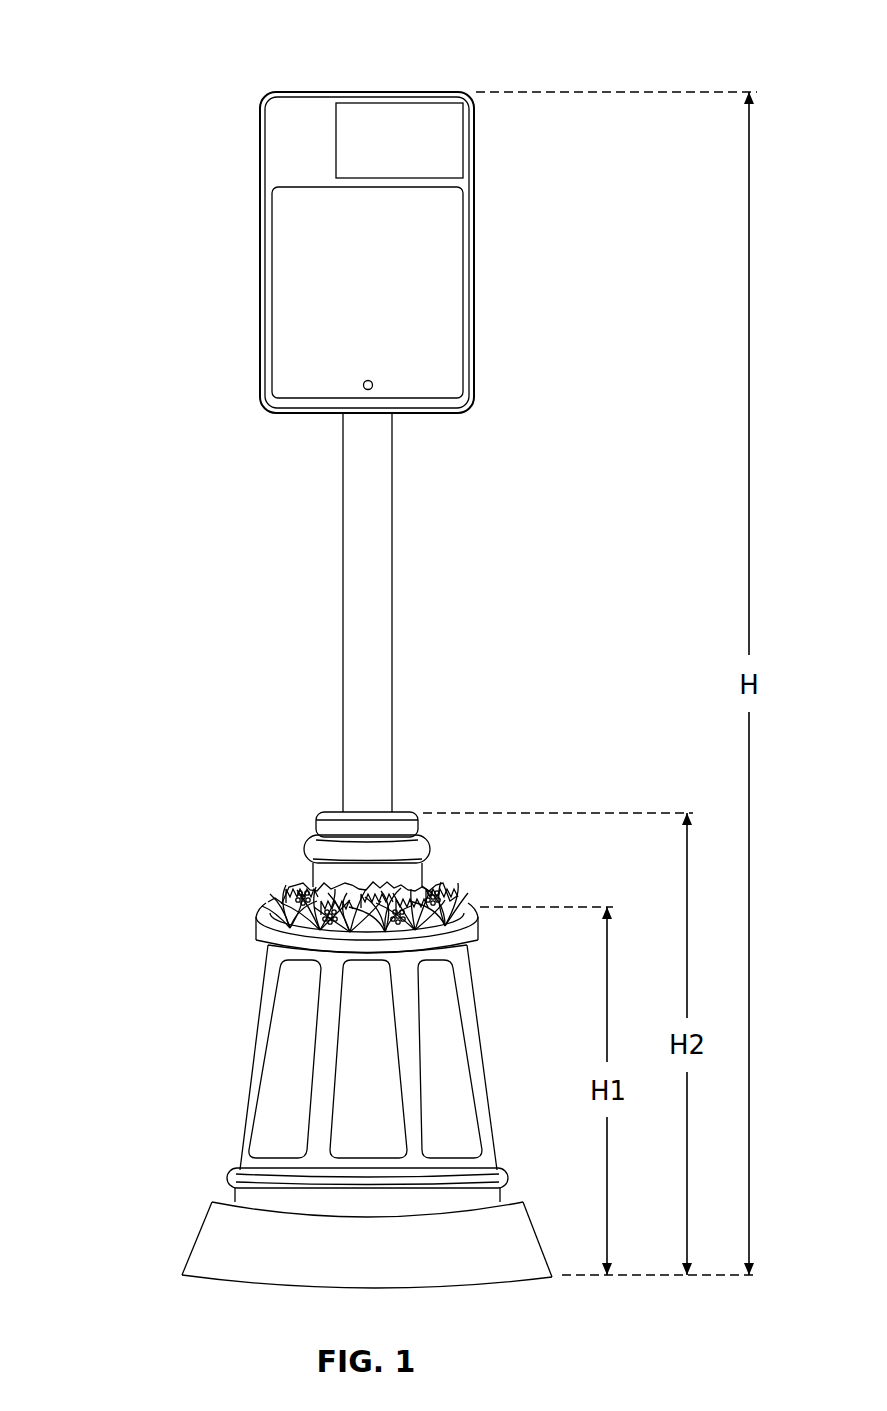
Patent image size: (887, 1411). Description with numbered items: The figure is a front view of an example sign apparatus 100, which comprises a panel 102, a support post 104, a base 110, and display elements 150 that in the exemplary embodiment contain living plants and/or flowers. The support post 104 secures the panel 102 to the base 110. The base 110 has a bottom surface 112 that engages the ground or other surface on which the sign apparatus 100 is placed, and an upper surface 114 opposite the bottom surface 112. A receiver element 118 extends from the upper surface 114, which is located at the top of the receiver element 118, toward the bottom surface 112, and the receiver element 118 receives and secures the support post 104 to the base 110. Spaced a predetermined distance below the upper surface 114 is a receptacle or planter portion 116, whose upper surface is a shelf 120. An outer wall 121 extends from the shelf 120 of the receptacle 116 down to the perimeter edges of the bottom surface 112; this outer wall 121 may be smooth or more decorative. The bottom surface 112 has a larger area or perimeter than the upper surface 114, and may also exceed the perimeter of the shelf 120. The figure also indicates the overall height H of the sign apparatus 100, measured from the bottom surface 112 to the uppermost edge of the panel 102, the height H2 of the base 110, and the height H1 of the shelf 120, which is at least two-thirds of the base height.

The sign apparatus 100 is at (123, 46).
The panel 102 is at (317, 352).
The support post 104 is at (368, 592).
The base 110 is at (280, 1077).
The bottom surface 112 is at (500, 1278).
The upper surface 114 is at (400, 817).
The receptacle or planter portion 116 is at (460, 903).
The receiver element 118 is at (330, 852).
The shelf 120 is at (268, 933).
The outer wall 121 is at (243, 1140).
The display elements 150 is at (292, 898).